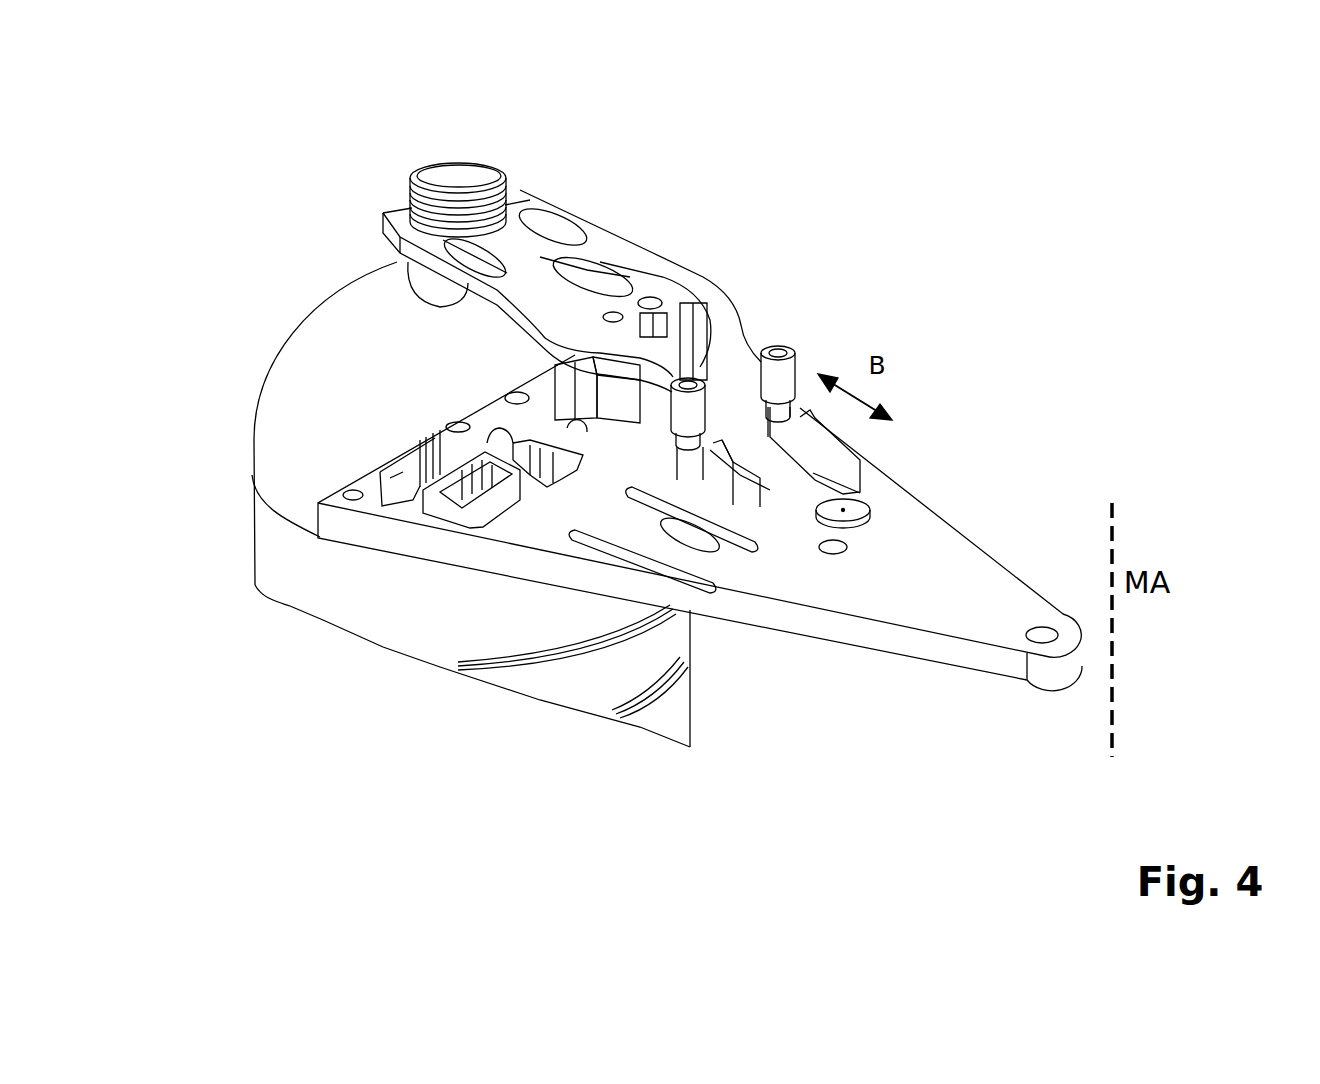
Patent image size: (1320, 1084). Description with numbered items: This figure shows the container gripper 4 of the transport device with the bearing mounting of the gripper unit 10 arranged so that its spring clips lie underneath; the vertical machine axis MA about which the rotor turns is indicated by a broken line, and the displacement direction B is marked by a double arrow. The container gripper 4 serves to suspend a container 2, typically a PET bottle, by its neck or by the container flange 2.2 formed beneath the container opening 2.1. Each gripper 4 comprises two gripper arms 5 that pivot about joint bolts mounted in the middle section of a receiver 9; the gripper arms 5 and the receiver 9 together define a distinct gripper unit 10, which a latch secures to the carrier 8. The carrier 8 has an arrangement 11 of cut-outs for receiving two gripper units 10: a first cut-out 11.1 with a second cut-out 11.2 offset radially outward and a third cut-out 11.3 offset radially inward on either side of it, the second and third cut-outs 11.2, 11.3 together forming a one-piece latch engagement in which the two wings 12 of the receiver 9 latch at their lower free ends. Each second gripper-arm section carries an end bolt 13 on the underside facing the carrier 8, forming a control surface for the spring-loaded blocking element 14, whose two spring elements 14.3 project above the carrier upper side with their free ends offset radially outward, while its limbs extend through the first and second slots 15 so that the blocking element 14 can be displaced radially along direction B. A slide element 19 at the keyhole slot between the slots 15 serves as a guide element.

The container 2 is at (342, 603).
The container opening 2.1 is at (458, 170).
The container flange 2.2 is at (417, 213).
The container gripper 4 is at (356, 245).
The gripper arm 5 is at (517, 287).
The carrier 8 is at (437, 423).
The receiver 9 is at (610, 397).
The gripper unit 10 is at (737, 243).
The arrangement of cut-outs 11 is at (381, 596).
The first cut-out 11.1 is at (463, 497).
The second cut-out 11.2 is at (407, 467).
The third cut-out 11.3 is at (519, 503).
The wing 12 is at (657, 420).
The end bolt 13 is at (760, 328).
The blocking element 14 is at (880, 446).
The spring element 14.3 is at (807, 437).
The slot 15 is at (647, 500).
The slide element 19 is at (848, 508).